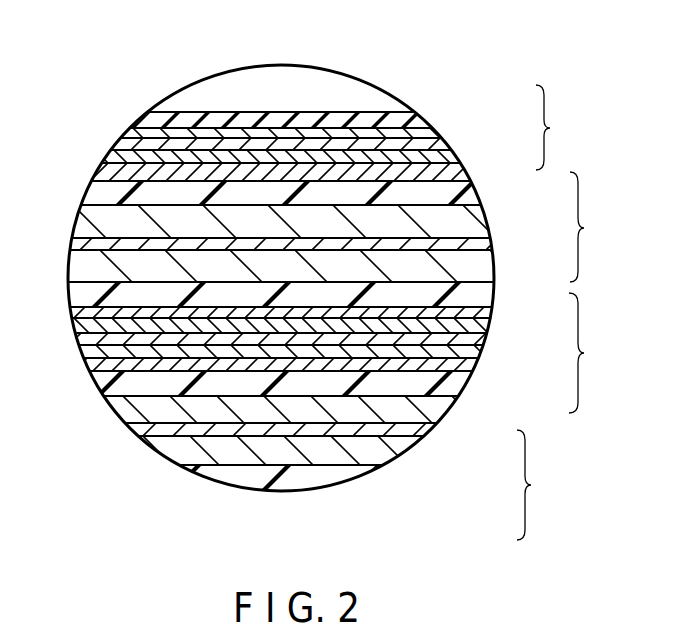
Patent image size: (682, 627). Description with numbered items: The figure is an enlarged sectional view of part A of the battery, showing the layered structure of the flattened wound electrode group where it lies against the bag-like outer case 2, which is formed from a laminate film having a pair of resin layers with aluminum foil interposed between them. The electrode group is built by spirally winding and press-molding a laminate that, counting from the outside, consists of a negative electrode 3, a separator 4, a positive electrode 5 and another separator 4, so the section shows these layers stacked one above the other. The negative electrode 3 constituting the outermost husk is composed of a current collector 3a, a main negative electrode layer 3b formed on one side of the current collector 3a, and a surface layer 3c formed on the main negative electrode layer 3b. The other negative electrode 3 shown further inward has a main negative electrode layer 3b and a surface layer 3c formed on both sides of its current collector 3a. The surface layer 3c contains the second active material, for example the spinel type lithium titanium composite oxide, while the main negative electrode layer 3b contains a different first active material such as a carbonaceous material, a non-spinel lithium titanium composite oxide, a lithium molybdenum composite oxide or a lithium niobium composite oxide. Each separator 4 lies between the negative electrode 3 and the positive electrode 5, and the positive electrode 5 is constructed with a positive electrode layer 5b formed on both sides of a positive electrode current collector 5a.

The part A is at (178, 101).
The outer case 2 is at (418, 115).
The negative electrode 3 is at (571, 249).
The current collector 3a is at (445, 142).
The main negative electrode layer 3b is at (457, 163).
The surface layer 3c is at (465, 180).
The separator 4 is at (94, 190).
The positive electrode 5 is at (562, 356).
The positive electrode current collector 5a is at (467, 242).
The positive electrode layer 5b is at (466, 212).